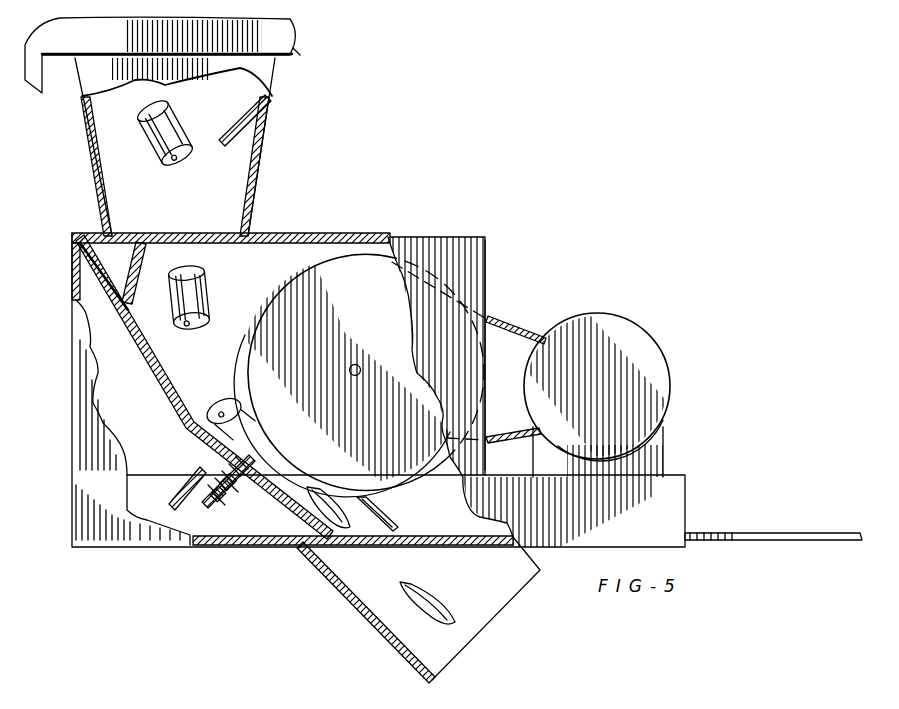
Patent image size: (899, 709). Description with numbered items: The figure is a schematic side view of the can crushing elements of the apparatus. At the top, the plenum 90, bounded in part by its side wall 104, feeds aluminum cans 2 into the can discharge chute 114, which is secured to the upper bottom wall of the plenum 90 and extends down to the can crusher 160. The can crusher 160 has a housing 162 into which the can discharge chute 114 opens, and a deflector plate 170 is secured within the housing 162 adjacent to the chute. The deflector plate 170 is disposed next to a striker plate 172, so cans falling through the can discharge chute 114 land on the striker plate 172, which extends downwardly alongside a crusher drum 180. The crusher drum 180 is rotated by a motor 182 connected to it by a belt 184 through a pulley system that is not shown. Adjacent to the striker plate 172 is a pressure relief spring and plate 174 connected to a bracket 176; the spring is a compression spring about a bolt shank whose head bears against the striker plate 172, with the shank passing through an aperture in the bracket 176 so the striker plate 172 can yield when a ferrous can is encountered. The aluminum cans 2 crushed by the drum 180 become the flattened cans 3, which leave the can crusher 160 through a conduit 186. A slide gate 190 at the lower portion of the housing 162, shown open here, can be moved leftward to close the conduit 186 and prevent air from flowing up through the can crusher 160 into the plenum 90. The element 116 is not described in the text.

The aluminum cans 2 is at (208, 301).
The flattened cans 3 is at (395, 528).
The plenum 90 is at (297, 52).
The side wall 104 is at (273, 30).
The can discharge chute 114 is at (258, 186).
The hopper baffle 116 is at (242, 118).
The can crusher 160 is at (393, 233).
The housing 162 is at (487, 248).
The deflector plate 170 is at (143, 270).
The striker plate 172 is at (165, 393).
The pressure relief spring and plate 174 is at (220, 470).
The bracket 176 is at (178, 487).
The crusher drum 180 is at (280, 265).
The motor 182 is at (667, 370).
The belt 184 is at (510, 320).
The conduit 186 is at (390, 638).
The slide gate 190 is at (840, 506).